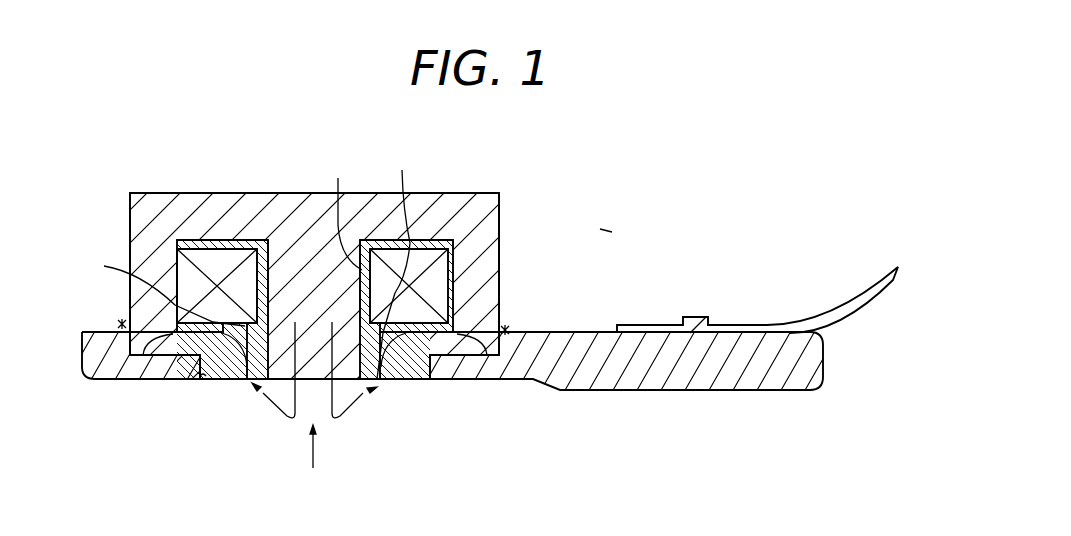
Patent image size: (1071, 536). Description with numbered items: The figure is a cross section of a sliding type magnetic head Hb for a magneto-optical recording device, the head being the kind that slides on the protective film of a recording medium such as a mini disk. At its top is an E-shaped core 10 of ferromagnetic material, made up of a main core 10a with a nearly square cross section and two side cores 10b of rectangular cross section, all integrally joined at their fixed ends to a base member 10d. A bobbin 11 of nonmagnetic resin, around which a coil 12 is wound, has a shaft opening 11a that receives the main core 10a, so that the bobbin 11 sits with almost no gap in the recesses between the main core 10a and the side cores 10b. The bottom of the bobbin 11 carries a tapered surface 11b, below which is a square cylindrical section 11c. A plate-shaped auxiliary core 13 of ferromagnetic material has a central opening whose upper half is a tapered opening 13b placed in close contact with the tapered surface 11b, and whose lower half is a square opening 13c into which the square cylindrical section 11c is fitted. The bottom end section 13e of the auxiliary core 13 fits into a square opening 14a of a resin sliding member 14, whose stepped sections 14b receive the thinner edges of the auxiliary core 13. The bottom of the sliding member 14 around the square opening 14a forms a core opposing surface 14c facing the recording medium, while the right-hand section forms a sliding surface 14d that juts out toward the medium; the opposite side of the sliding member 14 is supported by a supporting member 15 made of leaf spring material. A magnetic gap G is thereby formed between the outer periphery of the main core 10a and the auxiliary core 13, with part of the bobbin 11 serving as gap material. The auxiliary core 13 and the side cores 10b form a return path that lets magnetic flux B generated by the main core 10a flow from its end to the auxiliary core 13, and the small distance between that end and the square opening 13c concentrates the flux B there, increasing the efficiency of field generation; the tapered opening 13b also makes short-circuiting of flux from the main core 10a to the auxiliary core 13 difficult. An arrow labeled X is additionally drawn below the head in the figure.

The E-shaped core 10 is at (461, 187).
The main core 10a is at (282, 262).
The side core 10b is at (137, 265).
The base member 10d is at (248, 215).
The bobbin 11 is at (233, 237).
The shaft opening 11a is at (342, 213).
The tapered surface 11b is at (153, 286).
The square cylindrical section 11c is at (362, 396).
The coil 12 is at (205, 258).
The auxiliary core 13 is at (405, 386).
The tapered opening 13b is at (399, 263).
The square opening 13c is at (257, 383).
The bottom end section 13e is at (420, 381).
The sliding member 14 is at (592, 326).
The square opening 14a is at (207, 380).
The stepped section 14b is at (133, 380).
The core opposing surface 14c is at (478, 381).
The sliding surface 14d is at (667, 392).
The supporting member 15 is at (805, 318).
The sliding type magnetic head Hb is at (614, 228).
The magnetic gap G is at (313, 281).
The magnetic flux B is at (273, 385).
The direction X is at (314, 464).